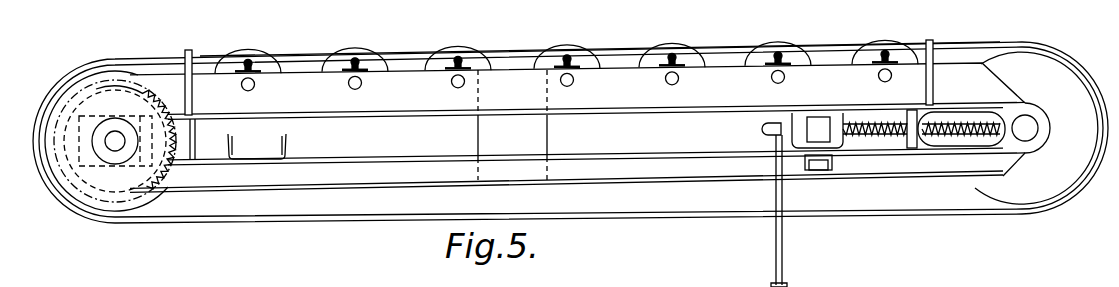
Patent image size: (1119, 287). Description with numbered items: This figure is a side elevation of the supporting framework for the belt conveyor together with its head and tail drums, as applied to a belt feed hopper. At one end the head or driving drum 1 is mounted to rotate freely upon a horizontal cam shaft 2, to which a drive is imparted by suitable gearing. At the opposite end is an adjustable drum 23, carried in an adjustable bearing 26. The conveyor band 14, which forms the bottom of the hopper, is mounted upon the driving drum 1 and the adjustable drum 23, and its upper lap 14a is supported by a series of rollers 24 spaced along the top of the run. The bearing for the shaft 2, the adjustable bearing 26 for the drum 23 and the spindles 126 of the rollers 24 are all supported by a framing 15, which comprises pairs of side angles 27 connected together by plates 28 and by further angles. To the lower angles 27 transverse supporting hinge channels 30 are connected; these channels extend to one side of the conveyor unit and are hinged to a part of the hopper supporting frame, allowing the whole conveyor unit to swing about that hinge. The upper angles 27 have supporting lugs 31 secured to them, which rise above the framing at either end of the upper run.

The head or driving drum 1 is at (118, 210).
The horizontal cam shaft 2 is at (113, 146).
The conveyor band 14 is at (46, 188).
The upper lap 14a is at (484, 54).
The framing 15 is at (327, 178).
The adjustable drum 23 is at (1040, 204).
The rollers 24 is at (350, 50).
The adjustable bearing 26 is at (1040, 127).
The side angles 27 is at (420, 88).
The plates 28 is at (530, 128).
The transverse supporting hinge channels 30 is at (287, 147).
The supporting lugs 31 is at (189, 57).
The spindles 126 is at (347, 83).